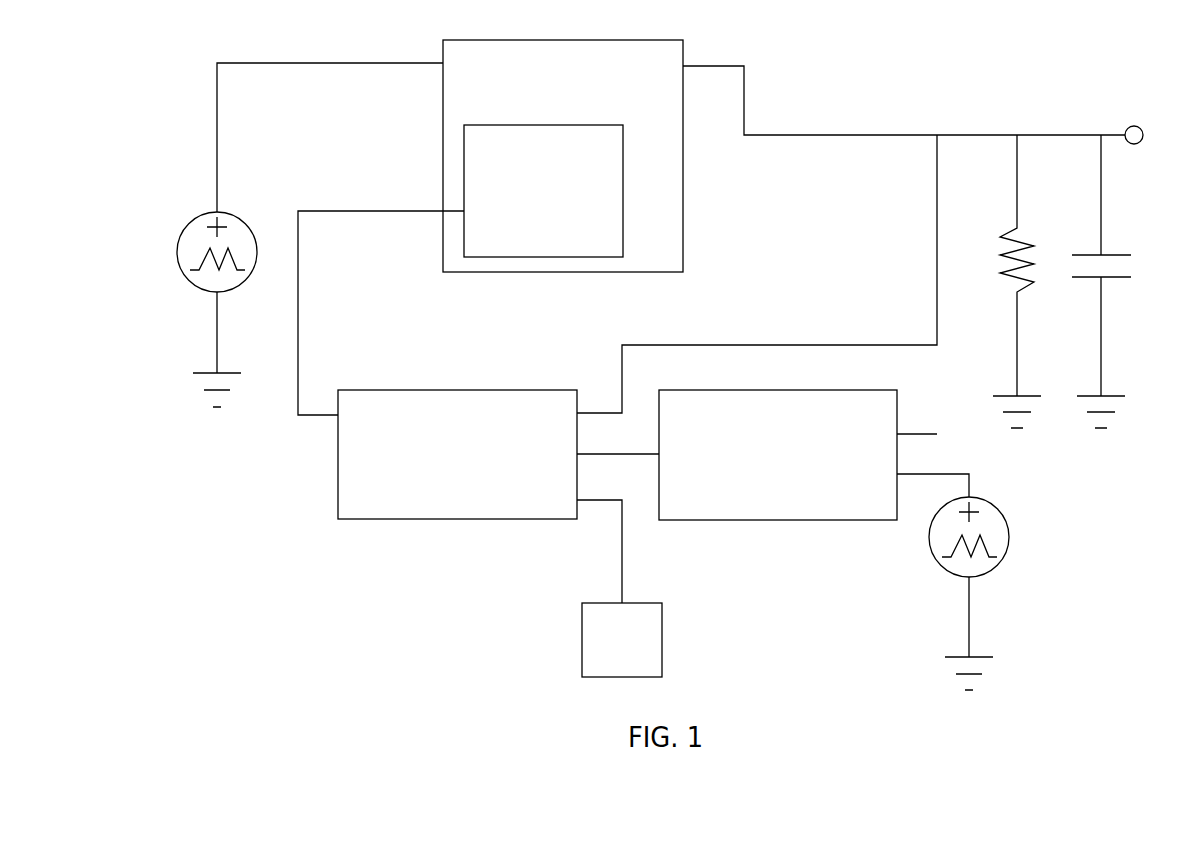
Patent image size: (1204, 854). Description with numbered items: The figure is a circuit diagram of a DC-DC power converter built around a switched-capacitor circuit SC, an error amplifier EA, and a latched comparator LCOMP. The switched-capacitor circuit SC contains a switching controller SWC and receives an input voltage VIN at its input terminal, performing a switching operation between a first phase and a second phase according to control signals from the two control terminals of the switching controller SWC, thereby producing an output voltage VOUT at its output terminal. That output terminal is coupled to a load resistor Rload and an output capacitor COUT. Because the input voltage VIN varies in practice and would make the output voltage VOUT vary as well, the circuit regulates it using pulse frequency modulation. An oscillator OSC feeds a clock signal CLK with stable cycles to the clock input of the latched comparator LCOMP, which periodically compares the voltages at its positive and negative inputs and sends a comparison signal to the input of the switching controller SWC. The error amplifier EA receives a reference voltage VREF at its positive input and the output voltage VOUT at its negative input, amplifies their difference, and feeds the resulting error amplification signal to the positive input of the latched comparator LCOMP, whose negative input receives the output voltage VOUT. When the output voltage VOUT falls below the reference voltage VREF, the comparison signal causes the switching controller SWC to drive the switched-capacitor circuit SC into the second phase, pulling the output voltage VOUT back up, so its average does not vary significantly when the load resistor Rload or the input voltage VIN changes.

The input voltage VIN is at (310, 235).
The switched-capacitor circuit SC is at (563, 272).
The switching controller SWC is at (464, 160).
The output voltage VOUT is at (920, 105).
The load resistor Rload is at (993, 281).
The output capacitor COUT is at (1078, 281).
The latched comparator LCOMP is at (360, 519).
The error amplifier EA is at (780, 390).
The reference voltage VREF is at (991, 582).
The clock signal CLK is at (629, 551).
The oscillator OSC is at (622, 640).